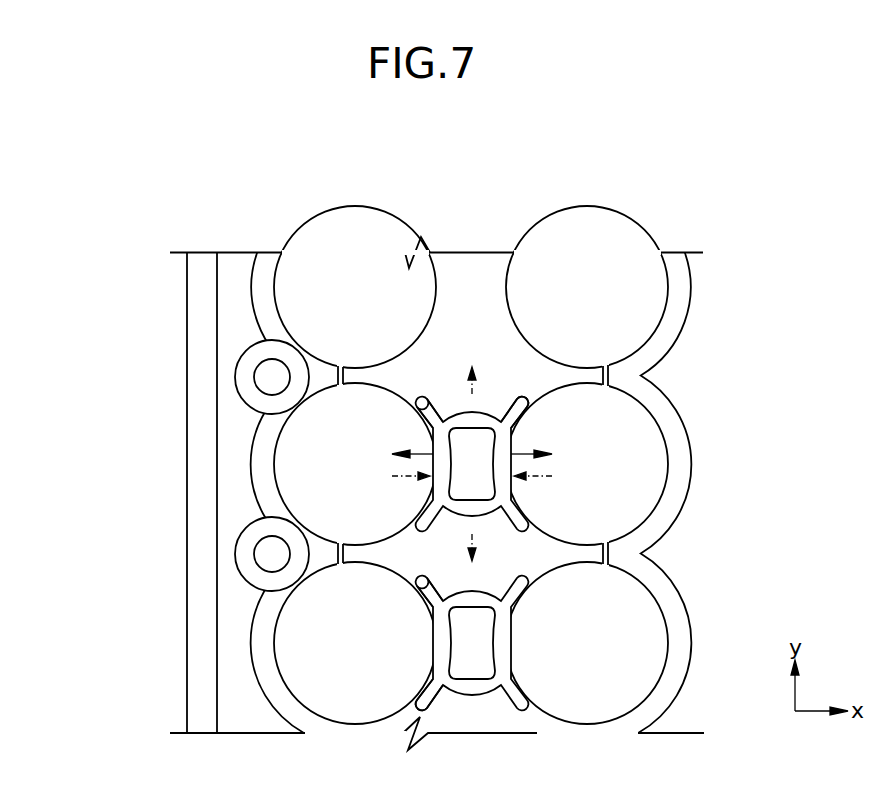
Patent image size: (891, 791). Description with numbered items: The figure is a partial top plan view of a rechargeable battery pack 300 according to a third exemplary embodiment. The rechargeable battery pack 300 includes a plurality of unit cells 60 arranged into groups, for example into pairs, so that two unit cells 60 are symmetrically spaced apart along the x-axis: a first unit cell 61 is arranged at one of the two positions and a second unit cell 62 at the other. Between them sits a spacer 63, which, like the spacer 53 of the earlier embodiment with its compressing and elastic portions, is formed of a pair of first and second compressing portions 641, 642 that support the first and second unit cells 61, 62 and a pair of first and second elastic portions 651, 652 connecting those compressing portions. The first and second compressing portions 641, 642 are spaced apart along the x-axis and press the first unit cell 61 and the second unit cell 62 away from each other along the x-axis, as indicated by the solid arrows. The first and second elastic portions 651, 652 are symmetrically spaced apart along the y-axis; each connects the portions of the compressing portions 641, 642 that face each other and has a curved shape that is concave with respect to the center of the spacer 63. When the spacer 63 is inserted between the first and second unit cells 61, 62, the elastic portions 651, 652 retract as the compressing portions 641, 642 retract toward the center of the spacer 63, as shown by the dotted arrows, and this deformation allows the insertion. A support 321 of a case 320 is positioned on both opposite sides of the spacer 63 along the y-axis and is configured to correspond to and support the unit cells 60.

The rechargeable battery pack 300 is at (252, 156).
The case 320 is at (203, 299).
The support 321 is at (259, 287).
The spacer 53 is at (436, 218).
The unit cells 60 is at (836, 245).
The first unit cell 61 is at (333, 280).
The second unit cell 62 is at (585, 280).
The spacer 63 is at (489, 514).
The first compressing portion 641 is at (423, 399).
The second compressing portion 642 is at (521, 400).
The first elastic portion 651 is at (462, 593).
The second elastic portion 652 is at (472, 696).